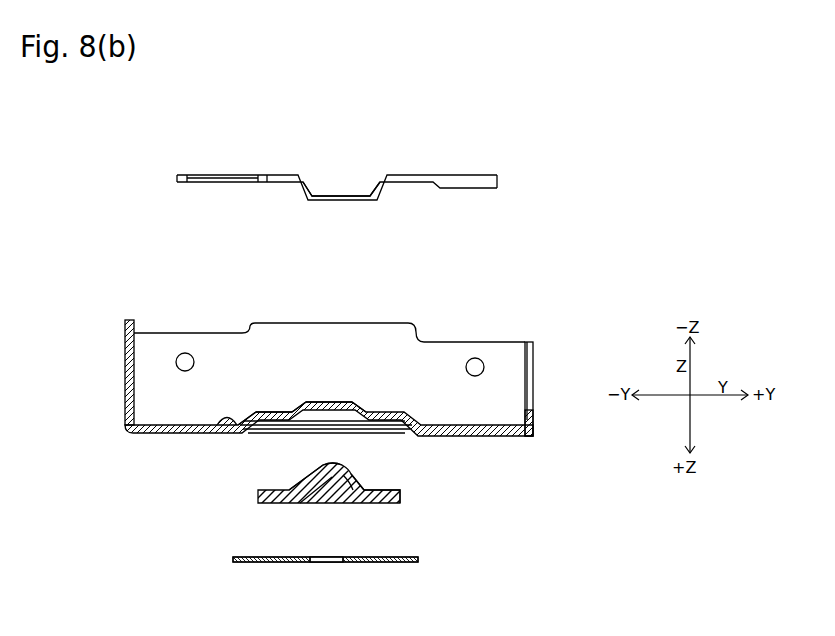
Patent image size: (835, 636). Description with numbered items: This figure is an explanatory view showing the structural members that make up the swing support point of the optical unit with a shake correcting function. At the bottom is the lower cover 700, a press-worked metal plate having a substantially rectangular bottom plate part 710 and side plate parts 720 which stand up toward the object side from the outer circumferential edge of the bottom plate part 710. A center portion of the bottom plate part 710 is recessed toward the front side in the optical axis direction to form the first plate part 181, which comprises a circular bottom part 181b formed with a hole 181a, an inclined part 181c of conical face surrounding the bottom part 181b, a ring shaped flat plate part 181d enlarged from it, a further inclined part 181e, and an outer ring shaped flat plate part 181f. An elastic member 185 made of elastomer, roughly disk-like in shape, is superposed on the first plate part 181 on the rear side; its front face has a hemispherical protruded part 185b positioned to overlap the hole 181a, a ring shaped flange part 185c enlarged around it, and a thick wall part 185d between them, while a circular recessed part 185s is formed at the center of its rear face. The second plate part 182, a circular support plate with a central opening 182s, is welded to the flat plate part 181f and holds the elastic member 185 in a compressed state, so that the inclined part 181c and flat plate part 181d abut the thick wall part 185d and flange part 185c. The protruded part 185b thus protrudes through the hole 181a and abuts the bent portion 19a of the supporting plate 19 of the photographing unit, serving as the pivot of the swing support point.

The supporting plate 19 is at (237, 177).
The bent portion of supporting plate 19a is at (333, 197).
The first plate part 181 is at (395, 336).
The hole 181a is at (350, 400).
The circular bottom part 181b is at (307, 400).
The inclined part 181c is at (287, 413).
The ring shaped flat plate part 181d is at (265, 413).
The inclined part 181e is at (252, 416).
The ring shaped flat plate part 181f is at (221, 430).
The second plate part 182 is at (412, 562).
The opening of plate member 182s is at (327, 562).
The elastic member 185 is at (363, 494).
The protruded part 185b is at (327, 473).
The flange part 185c is at (393, 497).
The thick wall part 185d is at (352, 483).
The circular recessed part 185s is at (318, 497).
The lower cover 700 is at (333, 406).
The bottom plate part 710 is at (165, 433).
The side plate part 720 is at (125, 367).